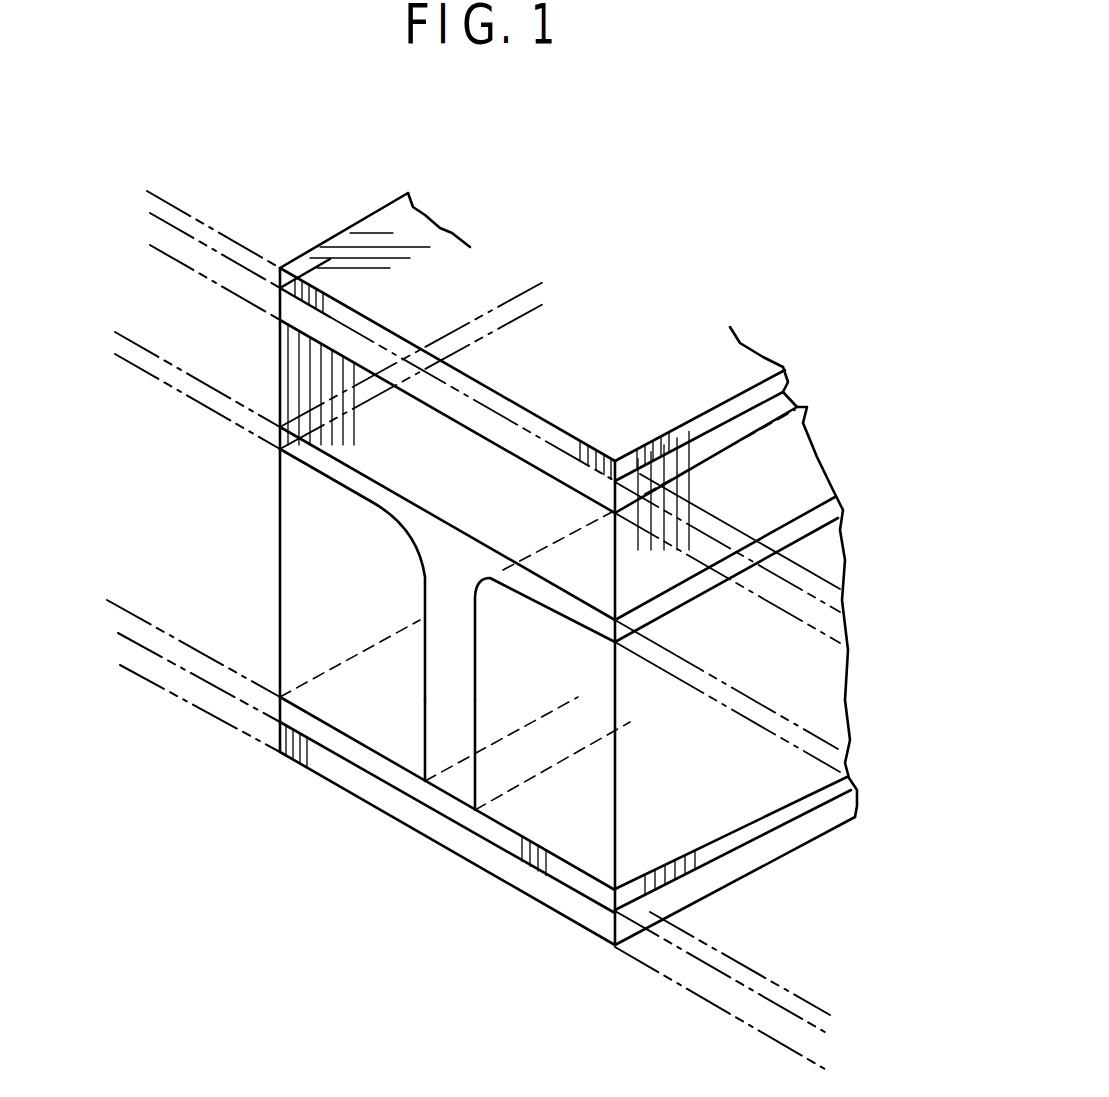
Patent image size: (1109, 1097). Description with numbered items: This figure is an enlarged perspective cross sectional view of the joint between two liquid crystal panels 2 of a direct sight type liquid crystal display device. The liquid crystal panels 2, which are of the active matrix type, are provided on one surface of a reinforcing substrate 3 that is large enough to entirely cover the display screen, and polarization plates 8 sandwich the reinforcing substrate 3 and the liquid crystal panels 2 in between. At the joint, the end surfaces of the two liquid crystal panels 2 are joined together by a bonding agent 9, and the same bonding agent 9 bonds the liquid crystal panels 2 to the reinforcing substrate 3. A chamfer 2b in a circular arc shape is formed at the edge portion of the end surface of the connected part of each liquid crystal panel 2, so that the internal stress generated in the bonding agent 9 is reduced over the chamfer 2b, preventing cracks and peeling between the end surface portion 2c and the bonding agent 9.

The liquid crystal panel 2 is at (266, 605).
The chamfer 2b is at (487, 575).
The end surface portion 2c is at (473, 768).
The reinforcing substrate 3 is at (280, 363).
The polarization plate 8 is at (305, 253).
The bonding agent 9 is at (280, 448).